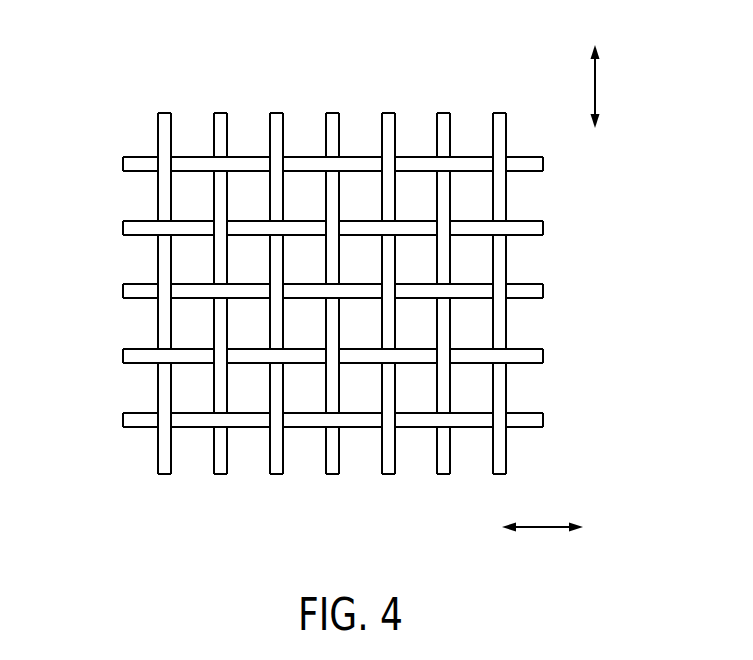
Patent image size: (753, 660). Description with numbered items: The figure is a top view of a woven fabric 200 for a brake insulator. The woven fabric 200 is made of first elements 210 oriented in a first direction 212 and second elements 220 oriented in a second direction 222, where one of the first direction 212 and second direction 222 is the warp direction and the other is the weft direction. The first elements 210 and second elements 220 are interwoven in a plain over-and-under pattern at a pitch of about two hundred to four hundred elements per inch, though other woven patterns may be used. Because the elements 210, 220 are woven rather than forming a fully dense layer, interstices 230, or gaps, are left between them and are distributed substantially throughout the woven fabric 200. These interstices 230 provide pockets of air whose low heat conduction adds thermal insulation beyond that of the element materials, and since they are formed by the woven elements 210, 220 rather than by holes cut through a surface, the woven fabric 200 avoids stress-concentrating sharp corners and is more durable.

The woven fabric 200 is at (101, 84).
The first elements 210 is at (220, 118).
The first direction 212 is at (596, 86).
The second elements 220 is at (132, 228).
The second direction 222 is at (537, 530).
The interstices 230 is at (182, 256).